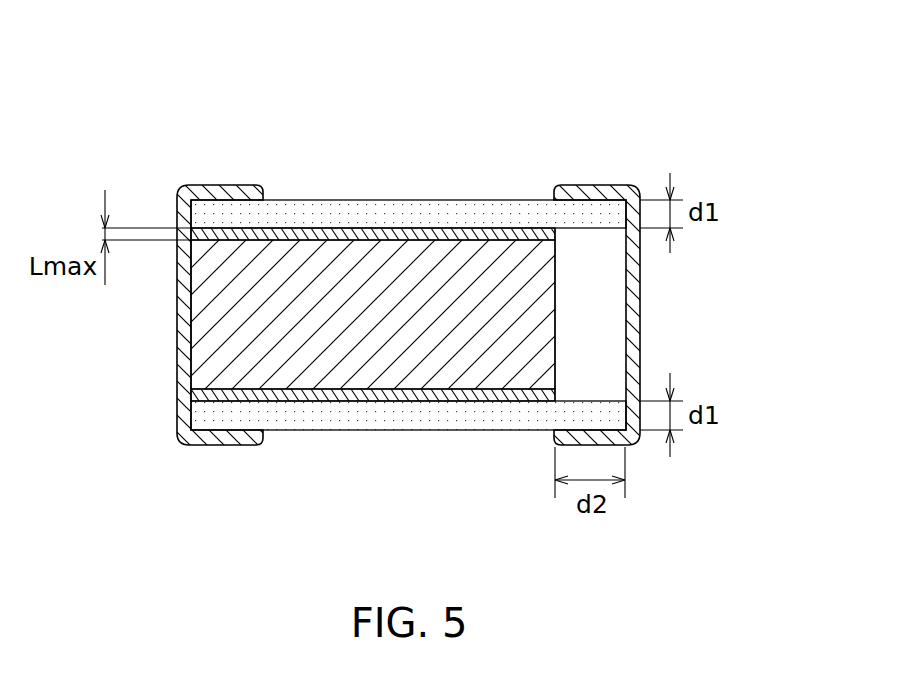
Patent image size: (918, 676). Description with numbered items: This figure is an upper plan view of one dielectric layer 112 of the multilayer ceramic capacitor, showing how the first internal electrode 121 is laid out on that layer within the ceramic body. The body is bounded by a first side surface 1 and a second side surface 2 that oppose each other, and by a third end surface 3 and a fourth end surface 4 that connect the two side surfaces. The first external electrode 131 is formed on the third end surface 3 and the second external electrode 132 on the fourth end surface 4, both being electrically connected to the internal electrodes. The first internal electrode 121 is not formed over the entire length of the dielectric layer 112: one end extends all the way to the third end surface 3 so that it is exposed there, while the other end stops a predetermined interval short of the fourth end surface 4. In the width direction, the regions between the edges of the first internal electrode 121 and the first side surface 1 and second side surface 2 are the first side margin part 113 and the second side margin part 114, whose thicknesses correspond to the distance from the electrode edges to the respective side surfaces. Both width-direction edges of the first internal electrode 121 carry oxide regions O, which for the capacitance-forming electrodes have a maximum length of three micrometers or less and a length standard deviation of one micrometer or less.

The first side surface 1 is at (428, 173).
The second side surface 2 is at (432, 447).
The third end surface 3 is at (165, 337).
The fourth end surface 4 is at (650, 303).
The dielectric layer 112 is at (610, 355).
The first side margin part 113 is at (202, 213).
The second side margin part 114 is at (203, 418).
The first internal electrode 121 is at (382, 358).
The first external electrode 131 is at (225, 187).
The second external electrode 132 is at (597, 187).
The oxide region O is at (290, 240).